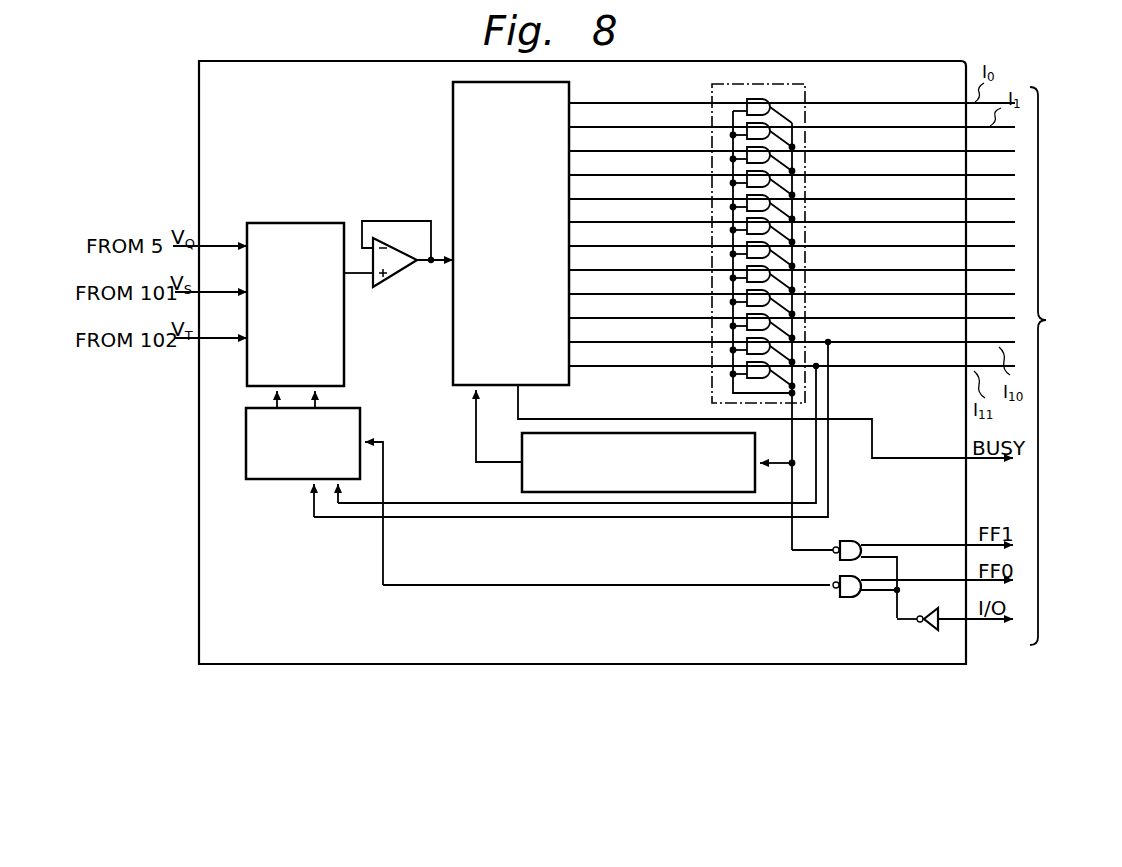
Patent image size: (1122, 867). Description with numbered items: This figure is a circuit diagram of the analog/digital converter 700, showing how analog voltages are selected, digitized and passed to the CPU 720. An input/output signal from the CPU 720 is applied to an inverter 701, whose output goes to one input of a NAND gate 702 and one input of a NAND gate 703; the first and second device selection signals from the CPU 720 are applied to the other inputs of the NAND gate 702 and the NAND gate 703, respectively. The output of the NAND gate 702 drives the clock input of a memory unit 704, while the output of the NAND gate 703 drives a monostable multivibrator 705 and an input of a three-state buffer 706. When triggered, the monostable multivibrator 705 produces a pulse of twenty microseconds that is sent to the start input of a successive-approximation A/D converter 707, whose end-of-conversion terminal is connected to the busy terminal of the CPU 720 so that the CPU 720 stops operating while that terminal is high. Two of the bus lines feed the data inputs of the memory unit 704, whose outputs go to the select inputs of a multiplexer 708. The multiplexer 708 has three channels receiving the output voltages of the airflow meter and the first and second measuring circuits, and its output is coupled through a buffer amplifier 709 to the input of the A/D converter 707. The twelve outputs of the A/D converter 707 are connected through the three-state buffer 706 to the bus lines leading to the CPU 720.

The analog/digital (A/D) converter 700 is at (877, 62).
The inverter 701 is at (931, 631).
The NAND gate 702 is at (842, 598).
The NAND gate 703 is at (846, 540).
The memory unit 704 is at (360, 409).
The monostable multivibrator 705 is at (522, 482).
The three-state buffer 706 is at (805, 95).
The successive-approximation A/D converter 707 is at (453, 120).
The multiplexer 708 is at (320, 223).
The buffer amplifier 709 is at (400, 278).
The CPU 720 is at (1064, 366).